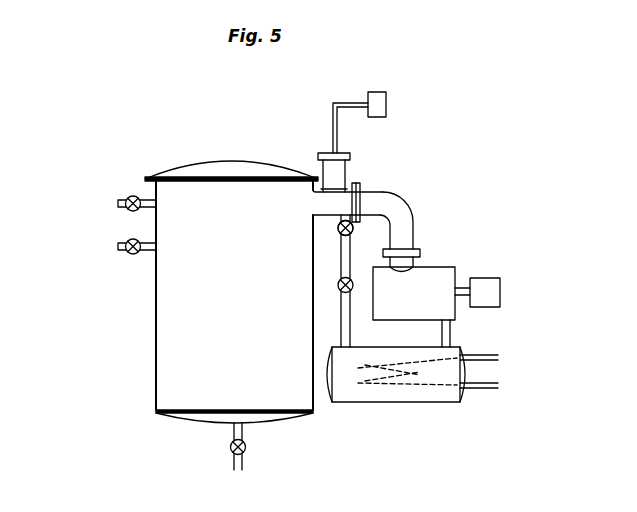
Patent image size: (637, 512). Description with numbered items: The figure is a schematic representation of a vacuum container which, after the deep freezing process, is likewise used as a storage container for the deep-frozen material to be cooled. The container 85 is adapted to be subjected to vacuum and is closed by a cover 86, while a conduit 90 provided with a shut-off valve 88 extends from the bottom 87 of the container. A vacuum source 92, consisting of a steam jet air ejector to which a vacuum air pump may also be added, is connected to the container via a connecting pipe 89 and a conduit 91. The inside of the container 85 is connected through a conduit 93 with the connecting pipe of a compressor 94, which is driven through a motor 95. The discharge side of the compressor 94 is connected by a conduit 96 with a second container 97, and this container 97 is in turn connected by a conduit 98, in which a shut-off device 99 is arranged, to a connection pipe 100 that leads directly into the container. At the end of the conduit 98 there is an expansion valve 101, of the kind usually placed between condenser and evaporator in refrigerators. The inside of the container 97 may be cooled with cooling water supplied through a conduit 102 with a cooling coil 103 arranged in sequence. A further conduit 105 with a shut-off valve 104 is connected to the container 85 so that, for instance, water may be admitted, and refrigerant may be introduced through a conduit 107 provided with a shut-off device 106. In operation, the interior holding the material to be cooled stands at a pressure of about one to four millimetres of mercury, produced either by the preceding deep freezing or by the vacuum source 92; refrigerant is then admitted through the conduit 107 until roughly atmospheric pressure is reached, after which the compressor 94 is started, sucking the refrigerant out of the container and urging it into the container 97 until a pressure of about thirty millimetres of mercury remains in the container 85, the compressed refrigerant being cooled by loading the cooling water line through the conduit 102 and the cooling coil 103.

The container 85 is at (157, 367).
The cover 86 is at (230, 161).
The bottom 87 is at (201, 422).
The shut-off valve 88 is at (245, 452).
The connecting pipe 89 is at (348, 172).
The conduit 90 is at (233, 464).
The conduit 91 is at (332, 128).
The vacuum source 92 is at (386, 105).
The conduit 93 is at (405, 206).
The compressor 94 is at (437, 267).
The motor 95 is at (502, 292).
The conduit 96 is at (450, 335).
The container 97 is at (414, 402).
The conduit 98 is at (349, 253).
The shut-off device 99 is at (337, 286).
The connection pipe 100 is at (312, 207).
The expansion valve 101 is at (338, 233).
The conduit 102 is at (490, 389).
The cooling coil 103 is at (373, 386).
The shut-off valve 104 is at (138, 252).
The conduit 105 is at (125, 253).
The shut-off device 106 is at (125, 210).
The conduit 107 is at (118, 200).